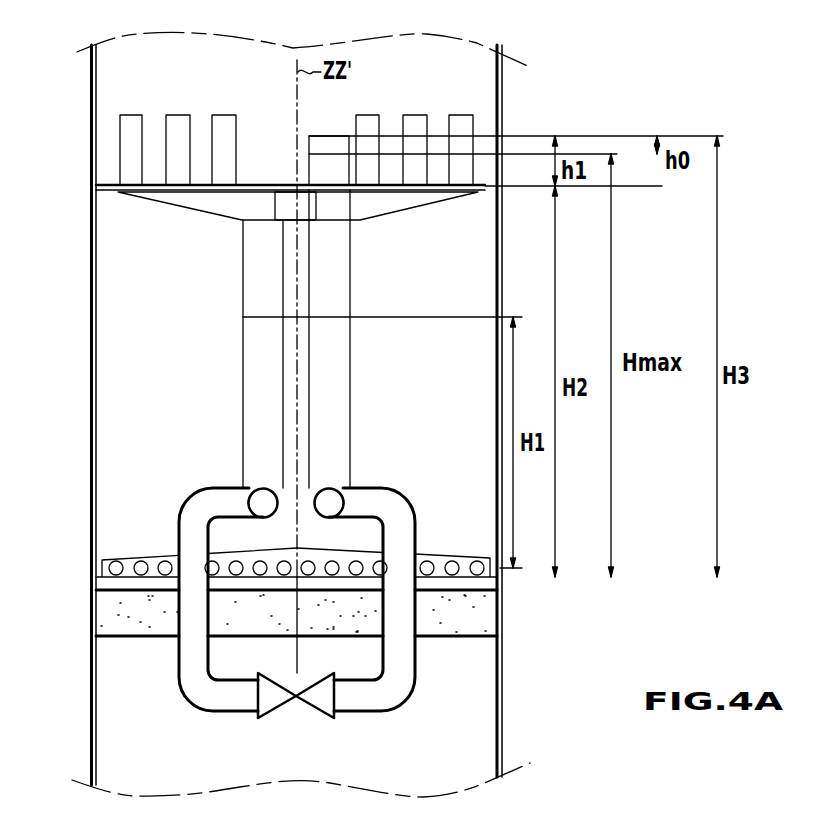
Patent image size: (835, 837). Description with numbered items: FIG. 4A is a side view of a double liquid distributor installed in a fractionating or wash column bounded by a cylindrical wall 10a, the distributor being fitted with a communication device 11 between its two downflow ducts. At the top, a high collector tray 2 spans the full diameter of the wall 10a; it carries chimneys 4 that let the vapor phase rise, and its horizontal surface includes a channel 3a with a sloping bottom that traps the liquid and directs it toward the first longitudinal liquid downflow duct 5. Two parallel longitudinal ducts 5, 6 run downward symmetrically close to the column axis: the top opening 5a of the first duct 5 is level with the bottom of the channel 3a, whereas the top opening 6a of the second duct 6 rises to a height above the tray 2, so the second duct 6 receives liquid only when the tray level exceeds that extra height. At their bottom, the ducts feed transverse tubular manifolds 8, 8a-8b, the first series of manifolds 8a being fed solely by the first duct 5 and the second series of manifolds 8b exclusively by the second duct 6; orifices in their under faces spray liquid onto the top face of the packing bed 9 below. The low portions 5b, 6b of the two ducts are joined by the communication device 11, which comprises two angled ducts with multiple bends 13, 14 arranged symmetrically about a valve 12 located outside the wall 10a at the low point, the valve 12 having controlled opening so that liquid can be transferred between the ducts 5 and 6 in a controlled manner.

The cylindrical wall 10a is at (90, 117).
The chimneys 4 is at (463, 123).
The top opening of the second duct 6a is at (327, 167).
The high collector tray 2 is at (487, 190).
The channel 3a is at (367, 208).
The top opening of the first longitudinal duct 5a is at (260, 222).
The first longitudinal liquid downflow duct 5 is at (255, 342).
The second longitudinal liquid downflow duct 6 is at (337, 342).
The low portion of the first duct 5b is at (264, 505).
The low portion of the second duct 6b is at (328, 503).
The transverse tubular manifolds 8 is at (296, 539).
The first series of manifolds 8a is at (196, 562).
The second series of manifolds 8b is at (453, 565).
The packing bed 9 is at (472, 609).
The angled duct 13 is at (177, 683).
The angled duct 14 is at (416, 683).
The valve 12 is at (276, 698).
The communication device 11 is at (241, 739).